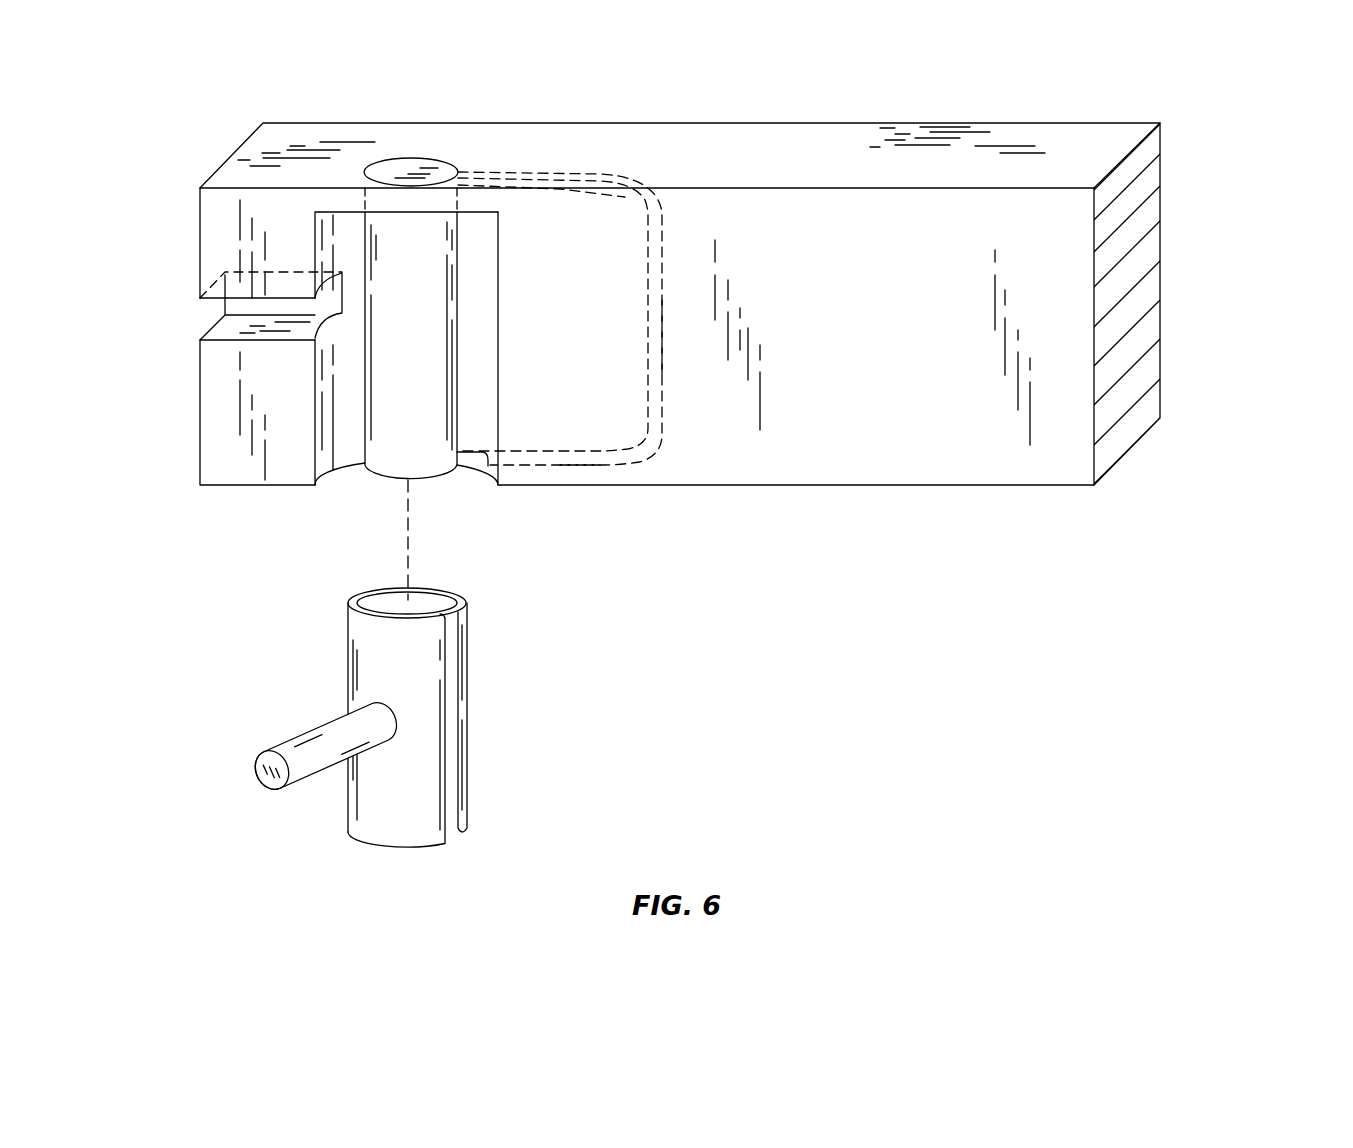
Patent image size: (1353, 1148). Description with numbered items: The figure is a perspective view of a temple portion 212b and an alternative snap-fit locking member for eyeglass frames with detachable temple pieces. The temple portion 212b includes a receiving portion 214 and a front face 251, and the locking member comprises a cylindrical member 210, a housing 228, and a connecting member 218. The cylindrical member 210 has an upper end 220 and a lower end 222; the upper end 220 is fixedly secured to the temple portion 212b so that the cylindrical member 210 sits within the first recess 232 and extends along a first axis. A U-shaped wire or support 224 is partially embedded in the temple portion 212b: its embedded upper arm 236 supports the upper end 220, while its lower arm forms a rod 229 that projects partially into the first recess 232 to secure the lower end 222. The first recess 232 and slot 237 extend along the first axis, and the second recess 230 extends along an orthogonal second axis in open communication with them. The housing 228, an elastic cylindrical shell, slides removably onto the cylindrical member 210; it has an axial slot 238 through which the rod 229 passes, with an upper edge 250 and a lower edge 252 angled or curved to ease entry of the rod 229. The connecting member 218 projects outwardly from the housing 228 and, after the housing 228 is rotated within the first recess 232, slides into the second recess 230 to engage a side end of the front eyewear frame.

The temple portion 212b is at (712, 320).
The receiving portion 214 is at (917, 136).
The front face 251 is at (635, 340).
The first recess 232 is at (327, 503).
The slot 237 is at (482, 334).
The second recess 230 is at (180, 308).
The cylindrical member 210 is at (474, 306).
The upper end 220 is at (395, 168).
The lower end 222 is at (443, 470).
The upper arm 236 is at (551, 172).
The U-shaped wire or support 224 is at (662, 338).
The rod 229 is at (590, 460).
The housing 228 is at (392, 730).
The upper edge 250 is at (408, 645).
The axial slot 238 is at (466, 699).
The lower edge 252 is at (468, 856).
The connecting member 218 is at (280, 740).